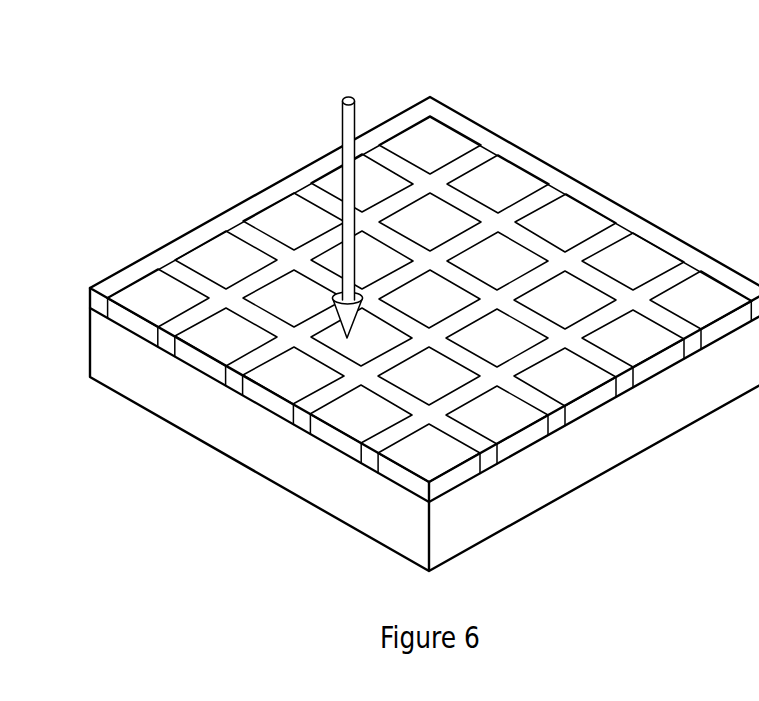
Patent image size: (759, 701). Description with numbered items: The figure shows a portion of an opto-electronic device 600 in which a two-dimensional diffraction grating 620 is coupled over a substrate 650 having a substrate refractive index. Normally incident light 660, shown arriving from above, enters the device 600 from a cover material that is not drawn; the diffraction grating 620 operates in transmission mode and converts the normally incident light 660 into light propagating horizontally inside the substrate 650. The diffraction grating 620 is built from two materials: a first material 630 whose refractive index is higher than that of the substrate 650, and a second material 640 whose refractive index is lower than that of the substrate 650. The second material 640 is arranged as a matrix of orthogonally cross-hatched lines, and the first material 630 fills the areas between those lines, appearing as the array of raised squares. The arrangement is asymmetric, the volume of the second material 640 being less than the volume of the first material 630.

The opto-electronic device 600 is at (437, 62).
The two-dimensional diffraction grating 620 is at (630, 151).
The first material 630 is at (587, 220).
The second material 640 is at (567, 187).
The substrate 650 is at (90, 351).
The normally incident light 660 is at (342, 123).